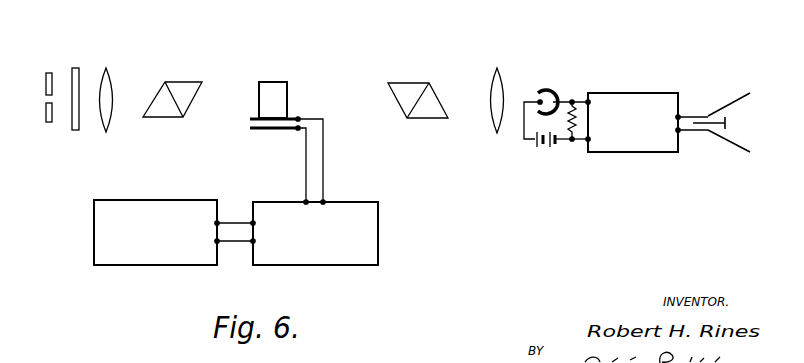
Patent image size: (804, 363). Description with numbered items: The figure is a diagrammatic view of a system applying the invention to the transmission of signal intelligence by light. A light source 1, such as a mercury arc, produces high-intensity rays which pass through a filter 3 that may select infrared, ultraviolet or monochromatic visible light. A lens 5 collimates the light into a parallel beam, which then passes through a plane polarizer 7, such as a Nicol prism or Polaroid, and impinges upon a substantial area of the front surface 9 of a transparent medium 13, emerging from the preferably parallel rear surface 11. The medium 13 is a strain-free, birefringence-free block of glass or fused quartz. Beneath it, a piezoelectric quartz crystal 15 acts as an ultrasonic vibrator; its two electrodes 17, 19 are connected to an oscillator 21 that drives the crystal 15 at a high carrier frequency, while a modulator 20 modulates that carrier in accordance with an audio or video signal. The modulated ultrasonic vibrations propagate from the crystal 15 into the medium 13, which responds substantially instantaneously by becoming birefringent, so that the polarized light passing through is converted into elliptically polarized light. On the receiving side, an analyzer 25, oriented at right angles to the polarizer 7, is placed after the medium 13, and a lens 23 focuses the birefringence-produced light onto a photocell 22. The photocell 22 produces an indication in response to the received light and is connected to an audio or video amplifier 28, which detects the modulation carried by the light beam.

The light source 1 is at (46, 112).
The filter 3 is at (75, 130).
The lens 5 is at (106, 132).
The plane polarizer 7 is at (165, 117).
The front surface 9 is at (259, 93).
The rear surface 11 is at (287, 96).
The transparent medium 13 is at (297, 58).
The piezoelectric crystal 15 is at (250, 125).
The electrode 17 is at (293, 118).
The electrode 19 is at (297, 130).
The modulator 20 is at (94, 236).
The oscillator 21 is at (378, 242).
The photocell 22 is at (548, 92).
The lens 23 is at (498, 133).
The analyzer 25 is at (425, 118).
The amplifier 28 is at (640, 143).